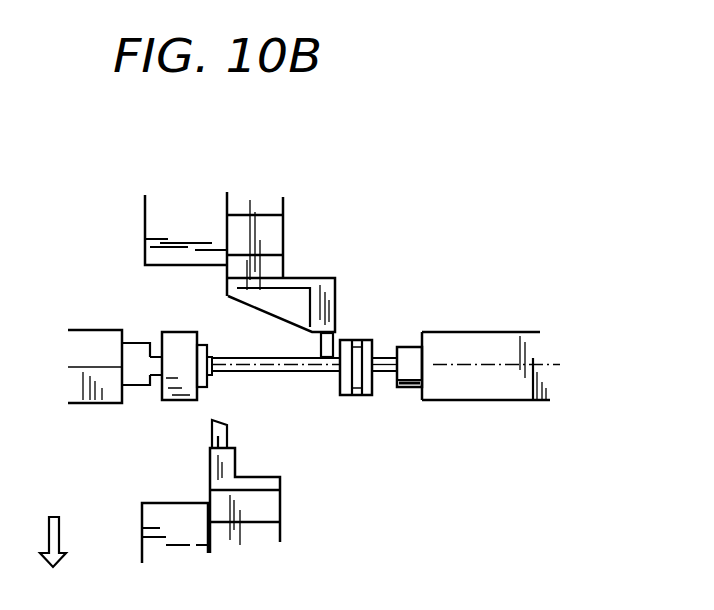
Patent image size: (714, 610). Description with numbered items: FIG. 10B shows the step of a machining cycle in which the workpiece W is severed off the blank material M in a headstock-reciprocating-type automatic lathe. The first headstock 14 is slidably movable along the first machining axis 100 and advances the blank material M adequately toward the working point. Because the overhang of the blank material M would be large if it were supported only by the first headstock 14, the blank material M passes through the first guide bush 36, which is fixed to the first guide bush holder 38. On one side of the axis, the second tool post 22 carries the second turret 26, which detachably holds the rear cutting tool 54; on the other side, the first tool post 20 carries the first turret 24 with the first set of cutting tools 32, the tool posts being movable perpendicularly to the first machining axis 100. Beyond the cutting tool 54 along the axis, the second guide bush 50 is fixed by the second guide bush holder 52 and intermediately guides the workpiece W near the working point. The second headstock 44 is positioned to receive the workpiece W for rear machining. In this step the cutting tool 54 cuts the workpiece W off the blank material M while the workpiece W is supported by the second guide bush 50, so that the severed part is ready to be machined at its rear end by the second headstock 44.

The first headstock 14 is at (95, 340).
The first guide bush holder 38 is at (180, 348).
The first guide bush 36 is at (207, 345).
The blank material M is at (262, 372).
The second tool post 22 is at (158, 215).
The second turret 26 is at (267, 242).
The rear cutting tool 54 is at (322, 344).
The second guide bush 50 is at (364, 340).
The second guide bush holder 52 is at (345, 396).
The workpiece W is at (388, 352).
The first machining axis 100 is at (438, 366).
The second headstock 44 is at (499, 352).
The first tool post 20 is at (167, 513).
The first set of cutting tools 32 is at (229, 437).
The first turret 24 is at (267, 507).